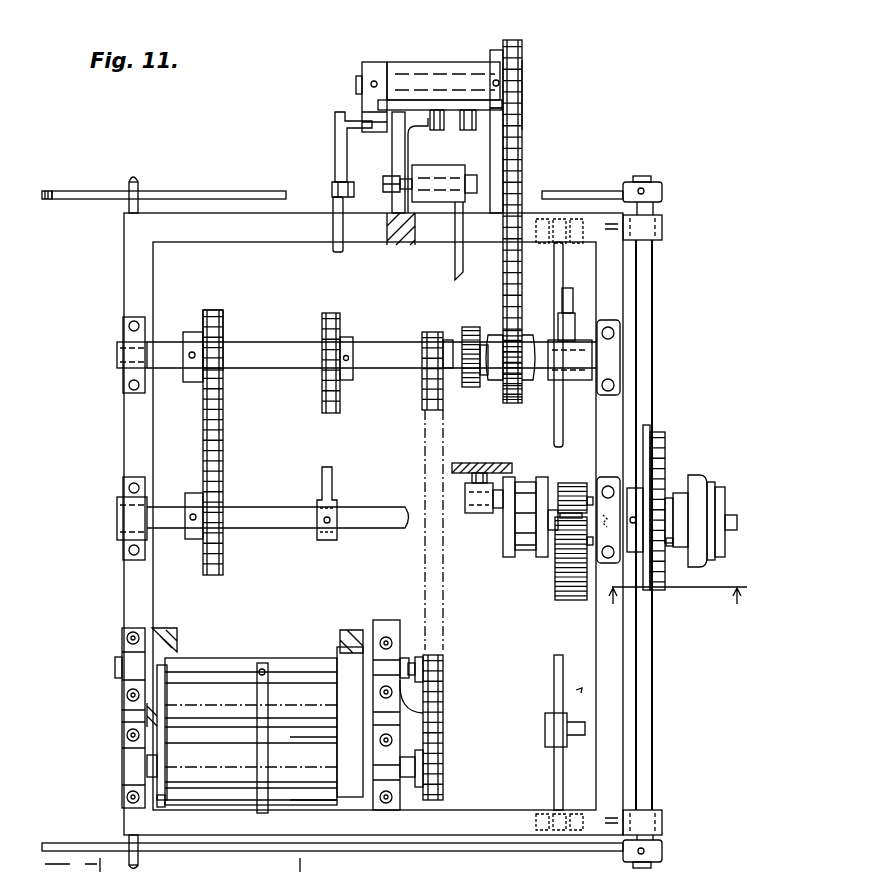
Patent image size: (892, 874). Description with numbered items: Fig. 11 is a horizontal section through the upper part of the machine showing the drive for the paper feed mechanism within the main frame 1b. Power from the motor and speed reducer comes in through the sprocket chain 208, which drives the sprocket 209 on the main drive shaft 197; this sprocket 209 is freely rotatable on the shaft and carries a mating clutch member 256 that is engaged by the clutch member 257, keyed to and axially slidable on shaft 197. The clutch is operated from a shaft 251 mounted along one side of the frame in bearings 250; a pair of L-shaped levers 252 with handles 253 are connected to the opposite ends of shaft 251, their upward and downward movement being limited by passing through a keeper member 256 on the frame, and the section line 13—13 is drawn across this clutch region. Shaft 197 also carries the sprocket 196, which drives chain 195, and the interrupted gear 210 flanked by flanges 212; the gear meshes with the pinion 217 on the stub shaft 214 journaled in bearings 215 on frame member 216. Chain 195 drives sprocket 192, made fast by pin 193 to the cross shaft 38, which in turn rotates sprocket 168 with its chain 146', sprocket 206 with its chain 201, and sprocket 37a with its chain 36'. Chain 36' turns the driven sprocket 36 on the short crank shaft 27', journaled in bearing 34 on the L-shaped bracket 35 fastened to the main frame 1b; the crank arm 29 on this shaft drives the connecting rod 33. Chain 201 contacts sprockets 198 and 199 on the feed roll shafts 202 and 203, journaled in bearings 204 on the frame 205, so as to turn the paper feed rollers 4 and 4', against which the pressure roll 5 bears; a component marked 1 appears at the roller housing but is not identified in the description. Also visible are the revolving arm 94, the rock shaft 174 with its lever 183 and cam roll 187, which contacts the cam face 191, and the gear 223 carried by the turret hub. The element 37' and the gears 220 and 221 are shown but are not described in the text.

The main frame 1b is at (148, 238).
The handle 253 is at (93, 179).
The clutch lever 252 is at (262, 182).
The keeper member 256 is at (137, 182).
The bearing 250 is at (663, 232).
The shaft 251 is at (655, 330).
The driven sprocket 36 is at (492, 205).
The chain 36' is at (550, 95).
The bearing 34 is at (416, 68).
The short shaft 27' is at (342, 97).
The L-shaped bracket 35 is at (400, 147).
The crank arm 29 is at (372, 131).
The connecting rod 33 is at (333, 232).
The shaft 38 is at (294, 330).
The sprocket 192 is at (206, 312).
The pin 193 is at (192, 360).
The chain 195 is at (216, 427).
The sprocket 196 is at (198, 495).
The shaft 197 is at (252, 528).
The arm 94 is at (318, 489).
The sprocket 168 is at (340, 330).
The chain 146' is at (343, 392).
The sprocket 206 is at (433, 390).
The gear 37' is at (456, 345).
The sprocket 37a is at (522, 390).
The cam face 191 is at (560, 338).
The cam roll 187 is at (574, 305).
The rock shaft 174 is at (556, 280).
The lever 183 is at (548, 747).
The sprocket chain 201 is at (424, 595).
The bearing 215 is at (488, 448).
The frame member 216 is at (505, 474).
The stub shaft 214 is at (500, 513).
The interrupted gear 210 is at (523, 524).
The pinion 217 is at (551, 463).
The flange 212 is at (542, 556).
The gear 220 is at (589, 478).
The hub 221 is at (558, 578).
The gear 223 is at (571, 598).
The sprocket chain 208 is at (668, 458).
The sprocket 209 is at (644, 522).
The clutch member 257 is at (701, 503).
The section line 13— 13 is at (680, 610).
The bearing 204 is at (128, 651).
The frame 205 is at (352, 628).
The pressure roll 5 is at (183, 712).
The motor 1 is at (305, 767).
The paper feed roller 4 is at (236, 719).
The paper feed roller 4' is at (120, 816).
The feed roll shaft 202 is at (153, 767).
The feed roll shaft 203 is at (445, 711).
The sprocket 199 is at (438, 668).
The sprocket 198 is at (445, 767).